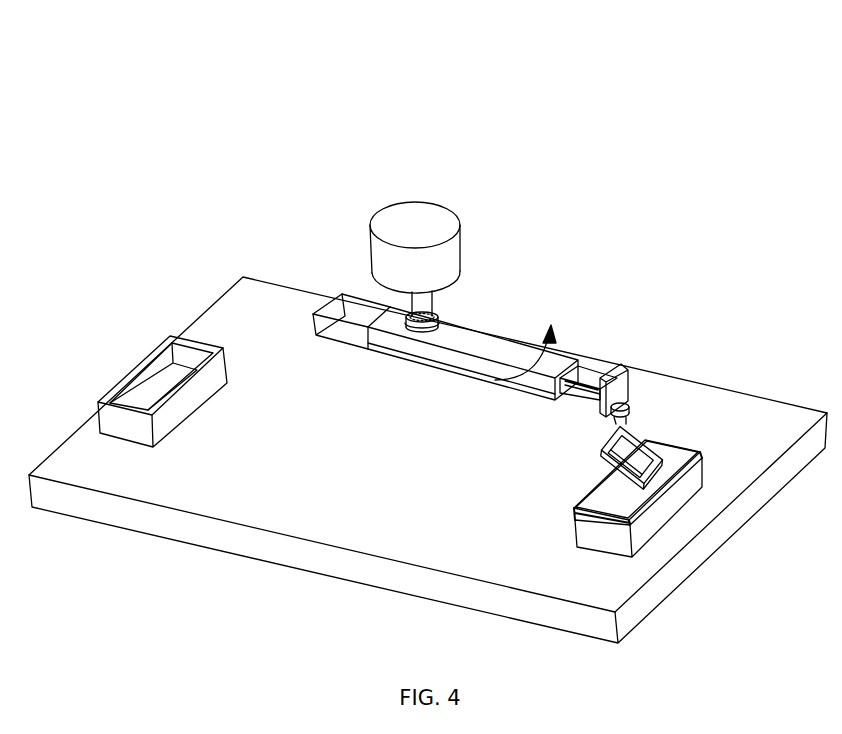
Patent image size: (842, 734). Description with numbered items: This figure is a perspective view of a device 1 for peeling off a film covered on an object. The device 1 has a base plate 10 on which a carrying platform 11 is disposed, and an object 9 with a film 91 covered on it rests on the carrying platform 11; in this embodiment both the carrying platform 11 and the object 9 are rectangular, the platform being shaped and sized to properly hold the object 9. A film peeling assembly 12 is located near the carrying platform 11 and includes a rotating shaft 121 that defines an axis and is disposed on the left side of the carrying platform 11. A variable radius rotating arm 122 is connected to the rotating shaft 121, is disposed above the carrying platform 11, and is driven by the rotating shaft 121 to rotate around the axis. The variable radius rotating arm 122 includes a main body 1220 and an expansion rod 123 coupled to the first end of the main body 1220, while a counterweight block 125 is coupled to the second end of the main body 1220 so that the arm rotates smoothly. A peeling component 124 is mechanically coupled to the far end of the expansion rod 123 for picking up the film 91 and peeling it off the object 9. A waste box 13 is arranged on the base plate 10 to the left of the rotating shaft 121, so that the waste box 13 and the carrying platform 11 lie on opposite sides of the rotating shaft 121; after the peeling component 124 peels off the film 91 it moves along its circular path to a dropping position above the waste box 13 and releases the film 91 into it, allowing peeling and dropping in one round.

The device 1 is at (408, 72).
The base plate 10 is at (220, 310).
The carrying platform 11 is at (605, 543).
The film peeling assembly 12 is at (486, 170).
The waste box 13 is at (192, 393).
The object 9 is at (575, 513).
The film 91 is at (602, 493).
The rotating shaft 121 is at (427, 302).
The variable radius rotating arm 122 is at (477, 404).
The main body 1220 is at (437, 355).
The expansion rod 123 is at (590, 378).
The peeling component 124 is at (643, 440).
The counterweight block 125 is at (353, 300).